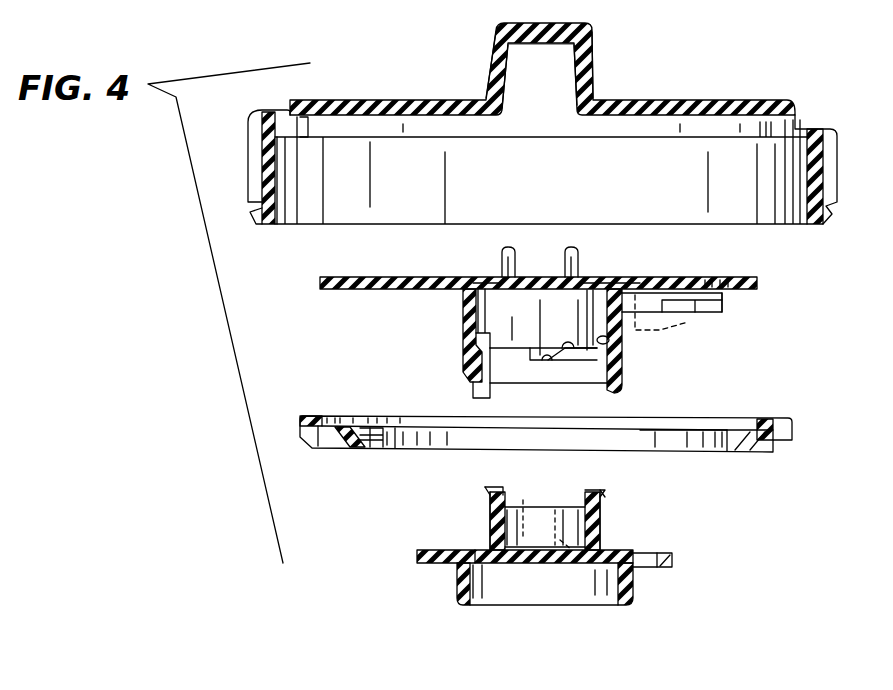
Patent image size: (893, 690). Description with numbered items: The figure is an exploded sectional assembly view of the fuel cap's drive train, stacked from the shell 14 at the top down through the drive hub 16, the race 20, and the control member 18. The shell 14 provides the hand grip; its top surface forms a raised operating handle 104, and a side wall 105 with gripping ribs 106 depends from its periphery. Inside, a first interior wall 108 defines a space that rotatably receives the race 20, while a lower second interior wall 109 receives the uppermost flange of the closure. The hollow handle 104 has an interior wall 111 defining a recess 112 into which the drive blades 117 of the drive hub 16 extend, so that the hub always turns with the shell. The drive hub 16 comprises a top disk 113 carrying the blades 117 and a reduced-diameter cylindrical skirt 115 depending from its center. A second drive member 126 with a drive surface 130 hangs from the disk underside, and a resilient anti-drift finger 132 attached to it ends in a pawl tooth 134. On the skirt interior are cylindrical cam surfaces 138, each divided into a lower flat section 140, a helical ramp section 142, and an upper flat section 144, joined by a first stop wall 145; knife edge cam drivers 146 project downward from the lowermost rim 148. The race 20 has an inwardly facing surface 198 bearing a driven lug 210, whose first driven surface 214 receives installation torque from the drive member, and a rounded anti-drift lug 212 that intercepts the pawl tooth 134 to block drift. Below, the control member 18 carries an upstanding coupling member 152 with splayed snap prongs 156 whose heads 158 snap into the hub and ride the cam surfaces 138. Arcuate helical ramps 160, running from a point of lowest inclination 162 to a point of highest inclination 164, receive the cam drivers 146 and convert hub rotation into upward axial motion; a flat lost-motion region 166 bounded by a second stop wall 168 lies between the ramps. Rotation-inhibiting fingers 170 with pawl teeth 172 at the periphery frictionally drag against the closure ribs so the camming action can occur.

The shell 14 is at (728, 97).
The raised operating handle 104 is at (596, 66).
The side wall 105 is at (250, 155).
The ribs 106 is at (835, 170).
The first interior wall 108 is at (297, 127).
The second interior wall 109 is at (277, 180).
The interior wall 111 is at (505, 92).
The recess 112 is at (537, 66).
The drive hub 16 is at (318, 272).
The top disk 113 is at (360, 289).
The cylindrical skirt 115 is at (463, 316).
The drive blades 117 is at (500, 260).
The second drive member 126 is at (652, 305).
The drive surface 130 is at (683, 335).
The anti-drift finger 132 is at (722, 313).
The pawl tooth 134 is at (720, 303).
The cam surface 138 is at (547, 344).
The lower flat section 140 is at (552, 365).
The intermediate helical ramp section 142 is at (575, 350).
The upper flat section 144 is at (607, 338).
The first stop wall 145 is at (540, 363).
The knife edge cam drivers 146 is at (473, 388).
The lowermost rim 148 is at (618, 388).
The race 20 is at (292, 416).
The peripherally extending surface 198 is at (673, 443).
The driven lug 210 is at (396, 442).
The anti-drift lug 212 is at (375, 427).
The first driven surface 214 is at (383, 442).
The control member 18 is at (386, 558).
The coupling member 152 is at (612, 521).
The snap prongs 156 is at (498, 480).
The head 158 is at (490, 492).
The arcuate helical ramps 160 is at (526, 510).
The point of lowest inclination 162 is at (485, 550).
The point of highest inclination 164 is at (568, 538).
The lost-motion region 166 is at (463, 550).
The second stop wall 168 is at (560, 540).
The rotation-inhibiting fingers 170 is at (670, 547).
The pawl tooth 172 is at (673, 560).